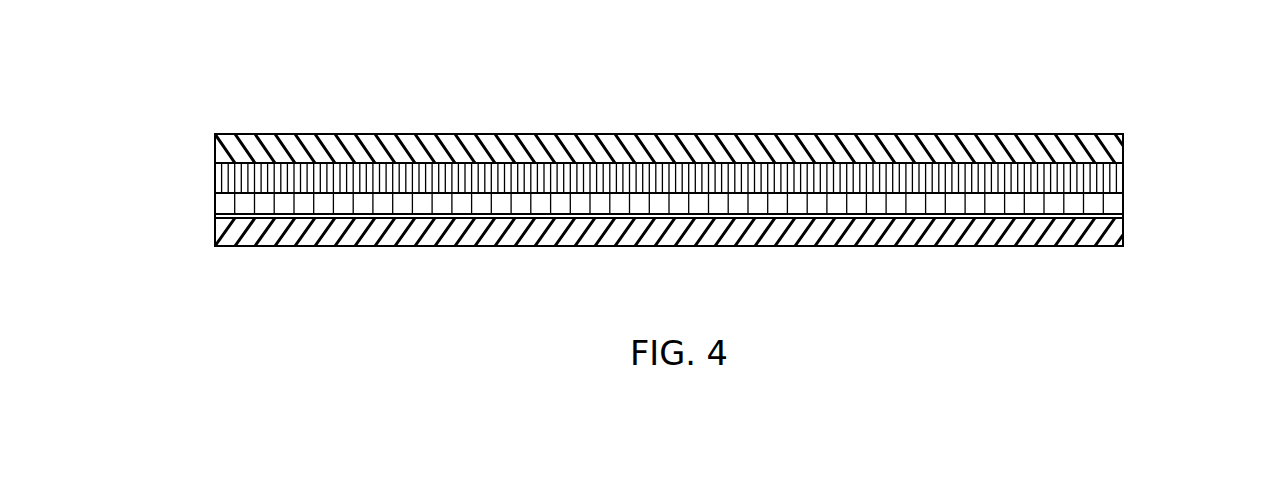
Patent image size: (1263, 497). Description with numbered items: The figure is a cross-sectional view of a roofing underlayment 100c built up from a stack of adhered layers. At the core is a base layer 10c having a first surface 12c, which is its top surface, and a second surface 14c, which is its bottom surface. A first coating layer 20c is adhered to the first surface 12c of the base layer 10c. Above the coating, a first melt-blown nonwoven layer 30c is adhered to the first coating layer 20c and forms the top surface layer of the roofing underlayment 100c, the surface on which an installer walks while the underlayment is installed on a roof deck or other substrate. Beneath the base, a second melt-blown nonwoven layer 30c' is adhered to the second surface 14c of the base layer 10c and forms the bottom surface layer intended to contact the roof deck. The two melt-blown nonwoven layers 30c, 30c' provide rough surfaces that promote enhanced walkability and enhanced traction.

The roofing underlayment 100c is at (1100, 70).
The first melt-blown nonwoven layer 30c is at (653, 101).
The second melt-blown nonwoven layer 30c' is at (648, 262).
The first coating layer 20c is at (1123, 182).
The base layer 10c is at (1123, 212).
The first surface 12c is at (237, 190).
The second surface 14c is at (943, 217).